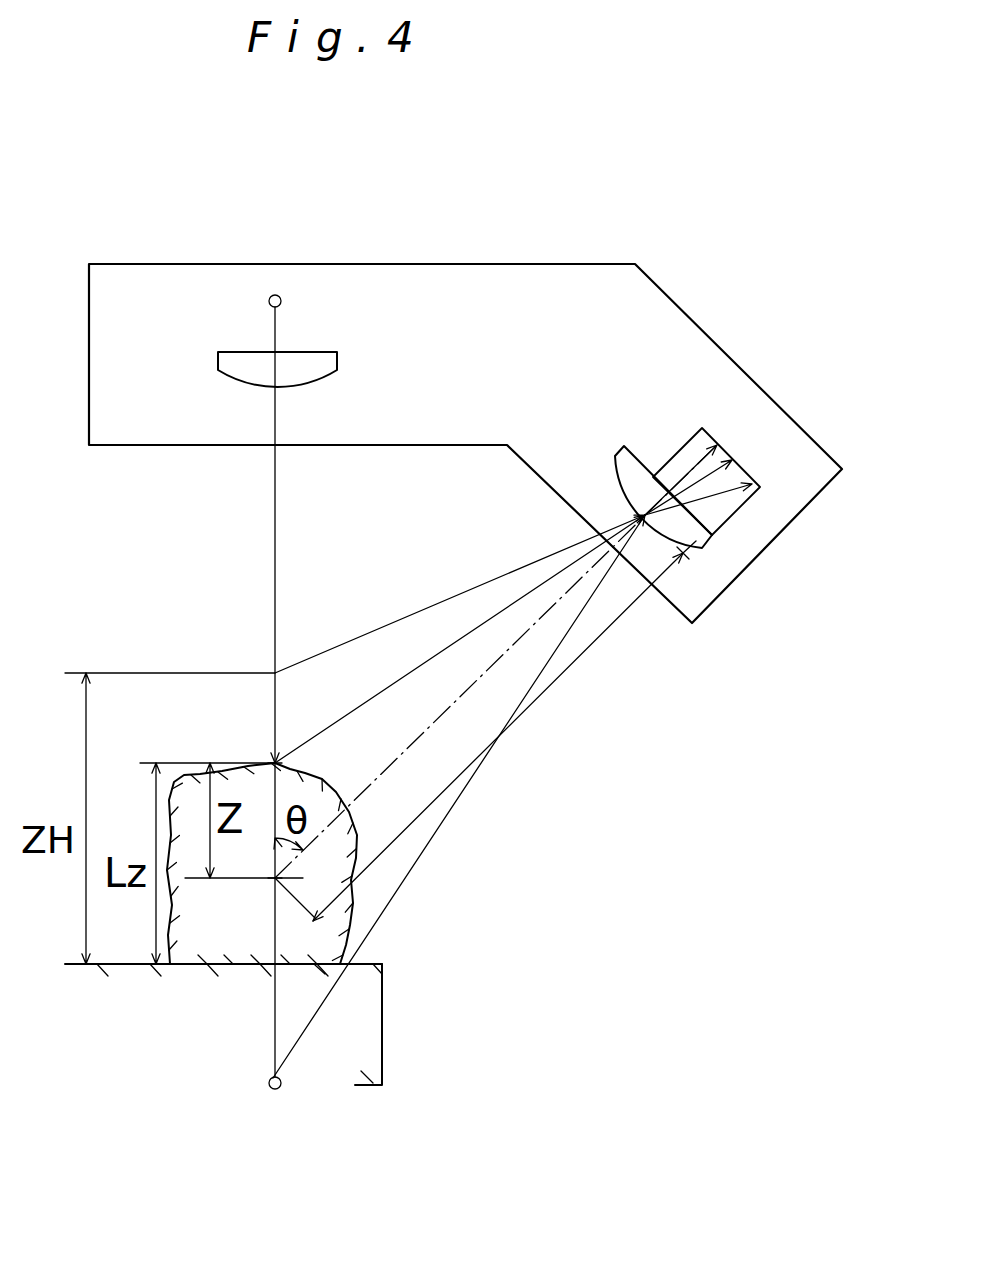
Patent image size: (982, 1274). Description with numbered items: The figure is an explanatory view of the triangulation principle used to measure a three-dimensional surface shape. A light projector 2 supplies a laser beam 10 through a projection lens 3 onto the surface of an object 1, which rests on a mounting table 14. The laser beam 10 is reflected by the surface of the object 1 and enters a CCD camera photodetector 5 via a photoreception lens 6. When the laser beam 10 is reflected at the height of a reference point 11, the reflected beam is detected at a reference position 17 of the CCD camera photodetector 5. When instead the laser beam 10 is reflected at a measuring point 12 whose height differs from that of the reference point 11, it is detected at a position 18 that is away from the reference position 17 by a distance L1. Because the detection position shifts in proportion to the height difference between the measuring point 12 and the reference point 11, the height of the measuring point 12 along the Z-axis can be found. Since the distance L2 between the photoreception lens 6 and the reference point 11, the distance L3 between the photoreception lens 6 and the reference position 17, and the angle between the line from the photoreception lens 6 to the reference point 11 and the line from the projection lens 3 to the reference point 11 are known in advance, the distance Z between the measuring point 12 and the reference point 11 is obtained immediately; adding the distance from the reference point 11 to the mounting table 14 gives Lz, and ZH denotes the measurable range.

The object 1 is at (365, 909).
The light projector 2 is at (283, 300).
The projection lens 3 is at (338, 357).
The CCD camera photodetector 5 is at (708, 420).
The photoreception lens 6 is at (707, 541).
The laser beam 10 is at (276, 573).
The reference point 11 is at (275, 879).
The measuring point 12 is at (280, 763).
The mounting table 14 is at (393, 1021).
The reference position 17 is at (720, 434).
The position 18 is at (742, 455).
The distance L1 is at (733, 444).
The distance L2 is at (448, 787).
The distance L3 is at (730, 513).